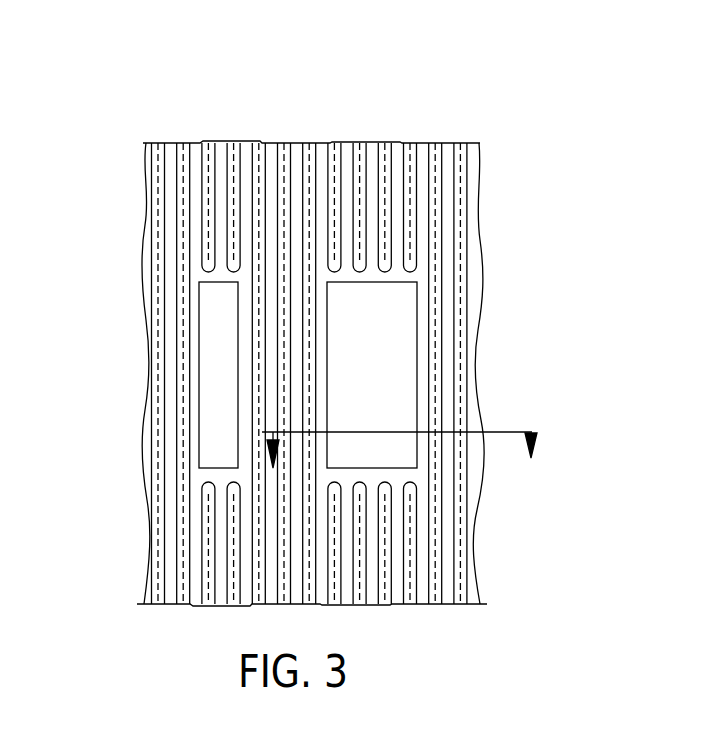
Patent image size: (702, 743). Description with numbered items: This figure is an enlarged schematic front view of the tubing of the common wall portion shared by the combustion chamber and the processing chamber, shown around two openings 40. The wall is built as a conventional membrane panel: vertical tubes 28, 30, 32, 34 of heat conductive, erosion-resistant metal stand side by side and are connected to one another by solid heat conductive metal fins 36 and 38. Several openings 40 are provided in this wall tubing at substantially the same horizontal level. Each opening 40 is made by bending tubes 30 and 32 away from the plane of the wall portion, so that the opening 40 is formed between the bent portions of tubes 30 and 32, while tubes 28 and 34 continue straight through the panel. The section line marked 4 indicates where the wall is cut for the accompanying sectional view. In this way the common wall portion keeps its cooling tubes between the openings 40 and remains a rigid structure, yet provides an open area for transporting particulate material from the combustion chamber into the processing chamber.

The vertical tube 28 is at (180, 142).
The vertical tube 30 is at (207, 142).
The vertical tube 32 is at (232, 142).
The vertical tube 34 is at (258, 142).
The fin 36 is at (167, 465).
The fin 38 is at (195, 215).
The opening 40 is at (235, 388).
The section line 4- 4 is at (401, 465).